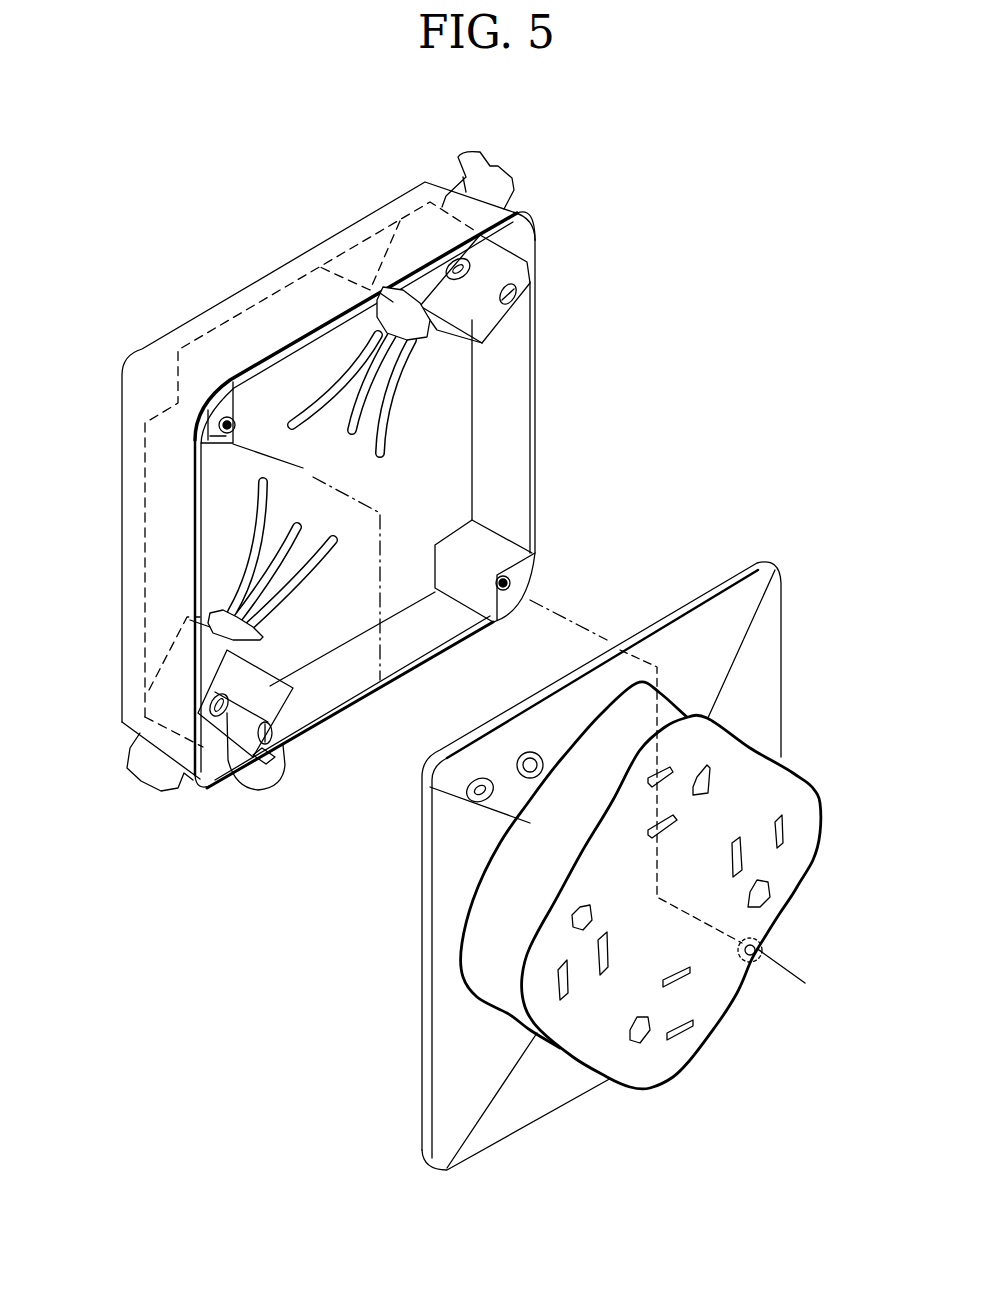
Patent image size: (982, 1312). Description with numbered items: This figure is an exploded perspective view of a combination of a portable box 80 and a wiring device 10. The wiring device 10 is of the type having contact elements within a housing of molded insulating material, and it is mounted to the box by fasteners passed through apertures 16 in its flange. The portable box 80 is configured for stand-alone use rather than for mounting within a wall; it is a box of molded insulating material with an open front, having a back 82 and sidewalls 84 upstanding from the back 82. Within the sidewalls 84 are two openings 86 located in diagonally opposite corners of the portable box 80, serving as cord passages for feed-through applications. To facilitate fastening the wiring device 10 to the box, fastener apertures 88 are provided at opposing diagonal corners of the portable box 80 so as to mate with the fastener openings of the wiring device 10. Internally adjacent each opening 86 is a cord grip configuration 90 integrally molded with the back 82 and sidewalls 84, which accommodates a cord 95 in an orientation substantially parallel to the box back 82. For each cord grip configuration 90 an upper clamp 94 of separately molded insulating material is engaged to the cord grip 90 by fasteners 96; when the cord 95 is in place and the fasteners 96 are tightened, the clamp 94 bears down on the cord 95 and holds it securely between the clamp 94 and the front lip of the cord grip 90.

The wiring device 10 is at (667, 617).
The apertures 16 is at (478, 793).
The portable box 80 is at (233, 312).
The back 82 is at (447, 463).
The sidewalls 84 is at (536, 392).
The openings 86 is at (463, 170).
The fastener apertures 88 is at (236, 423).
The cord grip configuration 90 is at (195, 620).
The upper clamp 94 is at (273, 690).
The cord 95 is at (240, 632).
The fasteners 96 is at (233, 777).